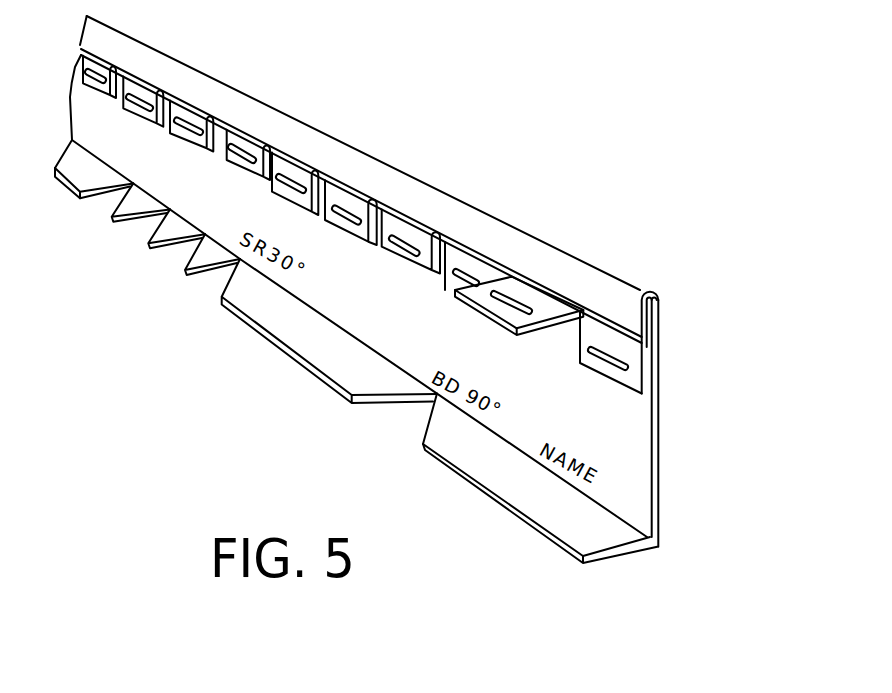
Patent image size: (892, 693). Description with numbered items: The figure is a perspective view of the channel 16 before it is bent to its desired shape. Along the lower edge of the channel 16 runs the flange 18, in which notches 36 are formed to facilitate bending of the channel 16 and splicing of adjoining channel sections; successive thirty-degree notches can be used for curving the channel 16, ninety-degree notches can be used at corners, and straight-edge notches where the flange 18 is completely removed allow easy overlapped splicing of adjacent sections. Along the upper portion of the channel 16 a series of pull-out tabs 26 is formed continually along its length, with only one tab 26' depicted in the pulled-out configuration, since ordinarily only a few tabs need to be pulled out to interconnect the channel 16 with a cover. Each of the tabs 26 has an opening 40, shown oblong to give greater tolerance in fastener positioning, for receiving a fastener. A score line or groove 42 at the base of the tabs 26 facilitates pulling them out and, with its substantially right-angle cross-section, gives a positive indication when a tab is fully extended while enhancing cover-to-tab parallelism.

The channel 16 is at (688, 413).
The flange 18 is at (594, 540).
The pull-out tabs 26 is at (279, 173).
The pulled-out tab 26' is at (534, 259).
The notches 36 is at (381, 402).
The opening 40 is at (604, 352).
The score line or groove 42 is at (627, 335).